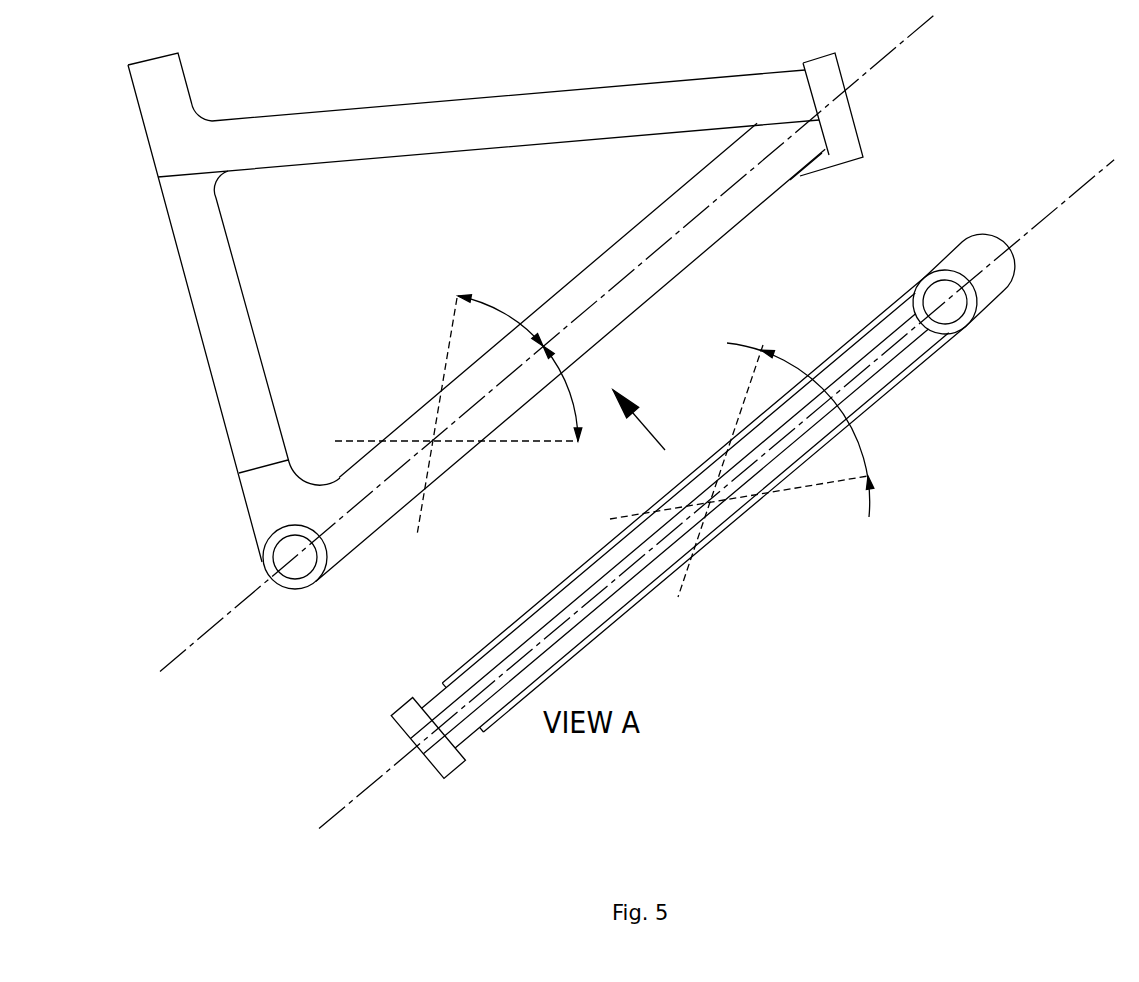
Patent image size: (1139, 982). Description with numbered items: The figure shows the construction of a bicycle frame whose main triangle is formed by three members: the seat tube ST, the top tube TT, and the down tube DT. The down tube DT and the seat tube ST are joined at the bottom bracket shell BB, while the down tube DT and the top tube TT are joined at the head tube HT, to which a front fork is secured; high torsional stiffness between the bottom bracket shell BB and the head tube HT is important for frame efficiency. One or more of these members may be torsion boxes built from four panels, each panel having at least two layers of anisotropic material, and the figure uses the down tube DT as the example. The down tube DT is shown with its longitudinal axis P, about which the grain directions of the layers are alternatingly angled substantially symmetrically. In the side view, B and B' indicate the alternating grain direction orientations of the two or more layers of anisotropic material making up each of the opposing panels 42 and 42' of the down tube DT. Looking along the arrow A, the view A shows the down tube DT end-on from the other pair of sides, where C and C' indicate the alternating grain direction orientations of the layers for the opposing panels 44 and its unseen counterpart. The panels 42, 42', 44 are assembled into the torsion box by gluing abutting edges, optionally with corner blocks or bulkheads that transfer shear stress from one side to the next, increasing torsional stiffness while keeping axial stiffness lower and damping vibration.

The top tube TT is at (460, 130).
The seat tube ST is at (217, 323).
The head tube HT is at (853, 120).
The bottom bracket shell BB is at (288, 556).
The down tube DT is at (370, 513).
The longitudinal axis P is at (214, 626).
The panel 42 is at (685, 458).
The opposing panel 42' is at (717, 505).
The panel 44 is at (578, 622).
The view A is at (645, 417).
The grain direction orientation B is at (456, 409).
The alternating grain direction orientation B' is at (569, 392).
The grain direction orientation C is at (740, 461).
The alternating grain direction orientation C' is at (880, 462).